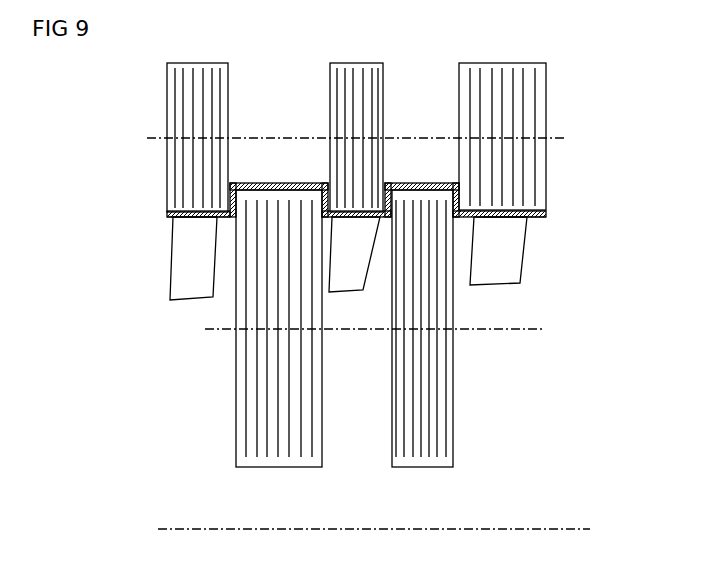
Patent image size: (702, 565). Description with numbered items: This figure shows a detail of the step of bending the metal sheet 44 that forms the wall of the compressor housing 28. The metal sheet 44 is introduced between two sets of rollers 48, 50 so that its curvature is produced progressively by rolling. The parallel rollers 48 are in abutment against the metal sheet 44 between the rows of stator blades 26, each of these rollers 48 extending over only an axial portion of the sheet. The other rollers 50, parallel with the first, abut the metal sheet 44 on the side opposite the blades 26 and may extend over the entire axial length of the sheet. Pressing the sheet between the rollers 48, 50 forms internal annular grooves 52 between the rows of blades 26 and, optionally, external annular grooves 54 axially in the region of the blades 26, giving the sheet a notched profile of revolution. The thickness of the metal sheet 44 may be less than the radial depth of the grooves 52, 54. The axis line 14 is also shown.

The rotor axis 14 is at (350, 528).
The stator blades 26 is at (348, 258).
The housing 28 is at (598, 122).
The metal sheet 44 is at (548, 217).
The parallel rollers 48 is at (256, 368).
The other rollers 50 is at (185, 101).
The internal annular grooves 52 is at (281, 183).
The external annular grooves 54 is at (186, 217).